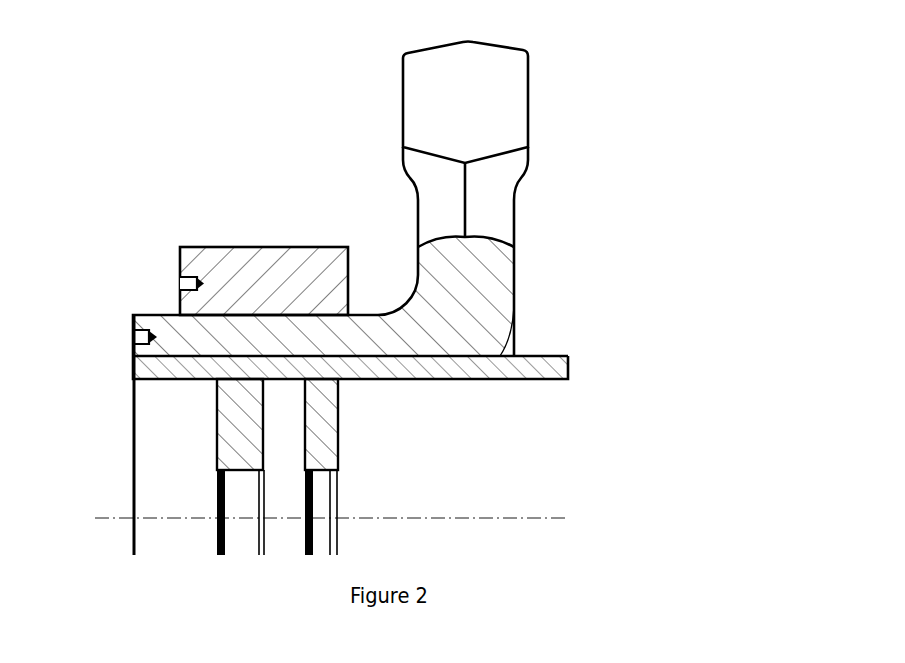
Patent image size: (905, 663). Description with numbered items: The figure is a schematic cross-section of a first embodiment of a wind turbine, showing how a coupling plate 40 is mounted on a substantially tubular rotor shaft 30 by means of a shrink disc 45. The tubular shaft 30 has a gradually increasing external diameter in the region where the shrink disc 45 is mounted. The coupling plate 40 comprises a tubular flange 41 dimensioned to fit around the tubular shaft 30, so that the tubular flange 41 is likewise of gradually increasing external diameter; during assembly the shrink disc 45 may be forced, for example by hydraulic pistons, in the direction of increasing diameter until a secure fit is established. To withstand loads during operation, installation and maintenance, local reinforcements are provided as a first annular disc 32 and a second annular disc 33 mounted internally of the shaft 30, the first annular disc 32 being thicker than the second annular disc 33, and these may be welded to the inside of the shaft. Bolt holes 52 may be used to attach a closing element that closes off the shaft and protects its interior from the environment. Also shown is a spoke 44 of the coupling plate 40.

The coupling plate 40 is at (578, 50).
The spoke 44 is at (490, 265).
The tubular flange 41 is at (300, 251).
The shrink disc 45 is at (283, 265).
The bolt holes 52 is at (124, 335).
The tubular rotor shaft 30 is at (523, 370).
The first annular disc 32 is at (245, 427).
The second annular disc 33 is at (320, 432).